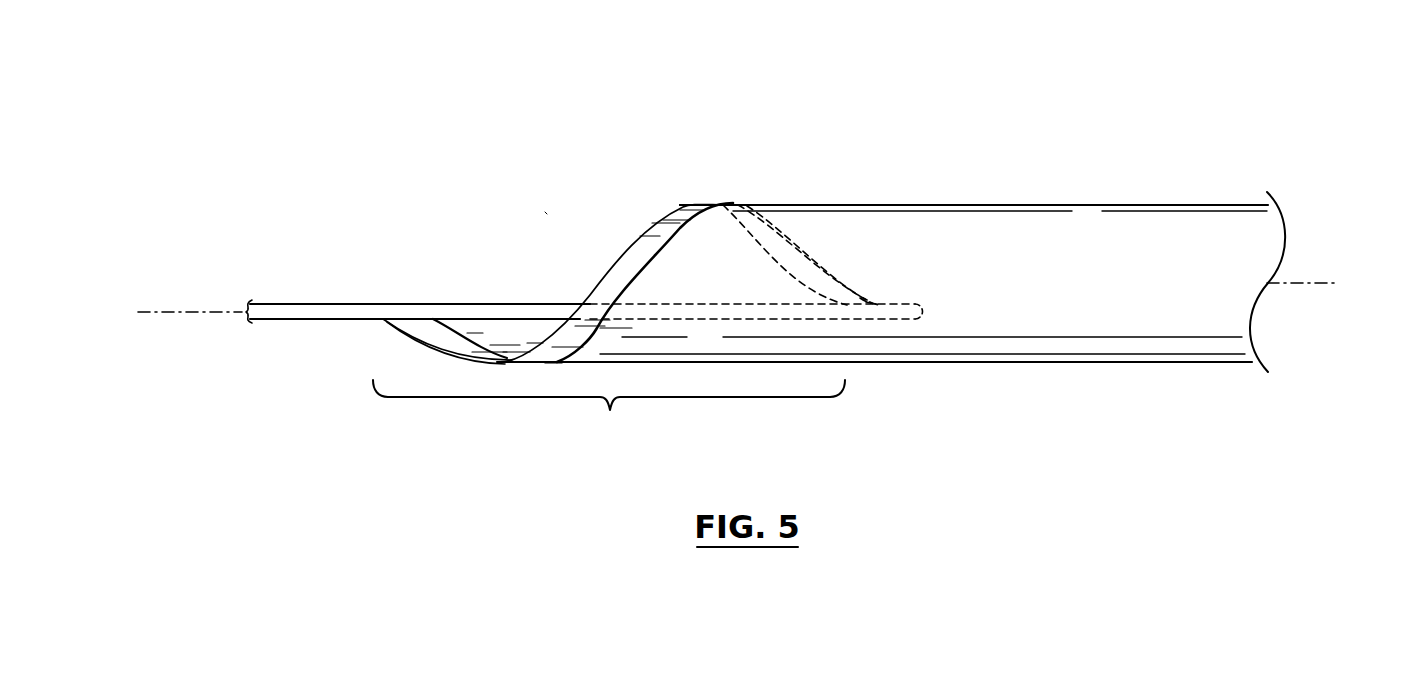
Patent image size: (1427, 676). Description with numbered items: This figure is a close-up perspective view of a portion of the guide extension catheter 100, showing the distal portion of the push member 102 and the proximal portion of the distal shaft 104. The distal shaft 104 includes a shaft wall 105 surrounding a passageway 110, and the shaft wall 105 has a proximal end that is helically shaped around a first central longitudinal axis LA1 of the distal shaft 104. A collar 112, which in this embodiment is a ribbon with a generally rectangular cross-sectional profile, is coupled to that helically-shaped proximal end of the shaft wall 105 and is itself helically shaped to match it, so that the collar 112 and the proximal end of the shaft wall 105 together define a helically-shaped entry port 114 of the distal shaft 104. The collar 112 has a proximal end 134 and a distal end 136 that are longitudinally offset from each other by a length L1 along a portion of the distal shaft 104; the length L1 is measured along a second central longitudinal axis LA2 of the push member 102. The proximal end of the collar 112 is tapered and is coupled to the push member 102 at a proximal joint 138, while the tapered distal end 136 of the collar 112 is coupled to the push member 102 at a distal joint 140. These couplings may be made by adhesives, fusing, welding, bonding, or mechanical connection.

The guide extension catheter 100 is at (390, 124).
The push member 102 is at (323, 304).
The distal shaft 104 is at (991, 197).
The shaft wall 105 is at (758, 203).
The passageway 110 is at (1290, 266).
The collar 112 is at (656, 233).
The entry port 114 is at (537, 198).
The proximal end of collar 134 is at (383, 319).
The distal end of collar 136 is at (878, 305).
The proximal joint 138 is at (397, 342).
The distal joint 140 is at (871, 292).
The length L1 is at (609, 415).
The first central longitudinal axis LA1 is at (1330, 285).
The second central longitudinal axis LA2 is at (159, 312).